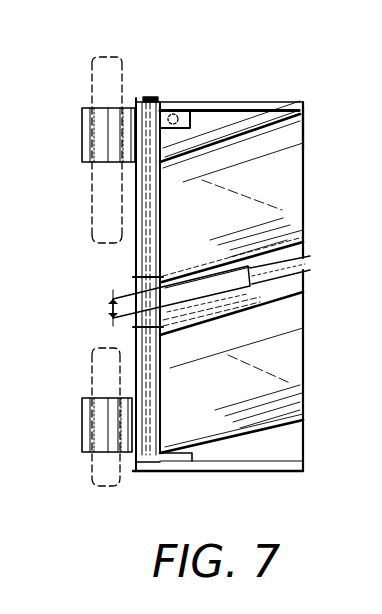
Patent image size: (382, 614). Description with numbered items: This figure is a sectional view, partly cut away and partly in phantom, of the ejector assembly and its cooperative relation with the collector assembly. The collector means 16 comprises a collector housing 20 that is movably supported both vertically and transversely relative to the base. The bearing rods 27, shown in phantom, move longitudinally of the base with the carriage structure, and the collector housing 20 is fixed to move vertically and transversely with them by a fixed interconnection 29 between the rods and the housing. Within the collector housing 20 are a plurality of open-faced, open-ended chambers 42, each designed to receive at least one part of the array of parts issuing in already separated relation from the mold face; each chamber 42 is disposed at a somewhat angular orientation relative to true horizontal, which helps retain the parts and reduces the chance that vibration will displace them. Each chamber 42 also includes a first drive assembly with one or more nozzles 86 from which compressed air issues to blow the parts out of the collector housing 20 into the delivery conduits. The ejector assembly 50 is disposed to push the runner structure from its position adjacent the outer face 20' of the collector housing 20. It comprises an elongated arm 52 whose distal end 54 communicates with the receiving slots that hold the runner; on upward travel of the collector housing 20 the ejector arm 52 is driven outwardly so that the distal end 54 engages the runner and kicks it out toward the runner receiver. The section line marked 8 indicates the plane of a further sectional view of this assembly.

The collector means 16 is at (196, 62).
The collector housing 20 is at (218, 264).
The outer face 20' is at (327, 135).
The bearing rods 27 is at (127, 77).
The fixed interconnection 29 is at (81, 122).
The chambers 42 is at (289, 223).
The ejector assembly 50 is at (100, 276).
The elongated arm 52 is at (225, 290).
The distal end 54 is at (302, 258).
The nozzles 86 is at (379, 297).
The section line 8- 8 is at (330, 106).